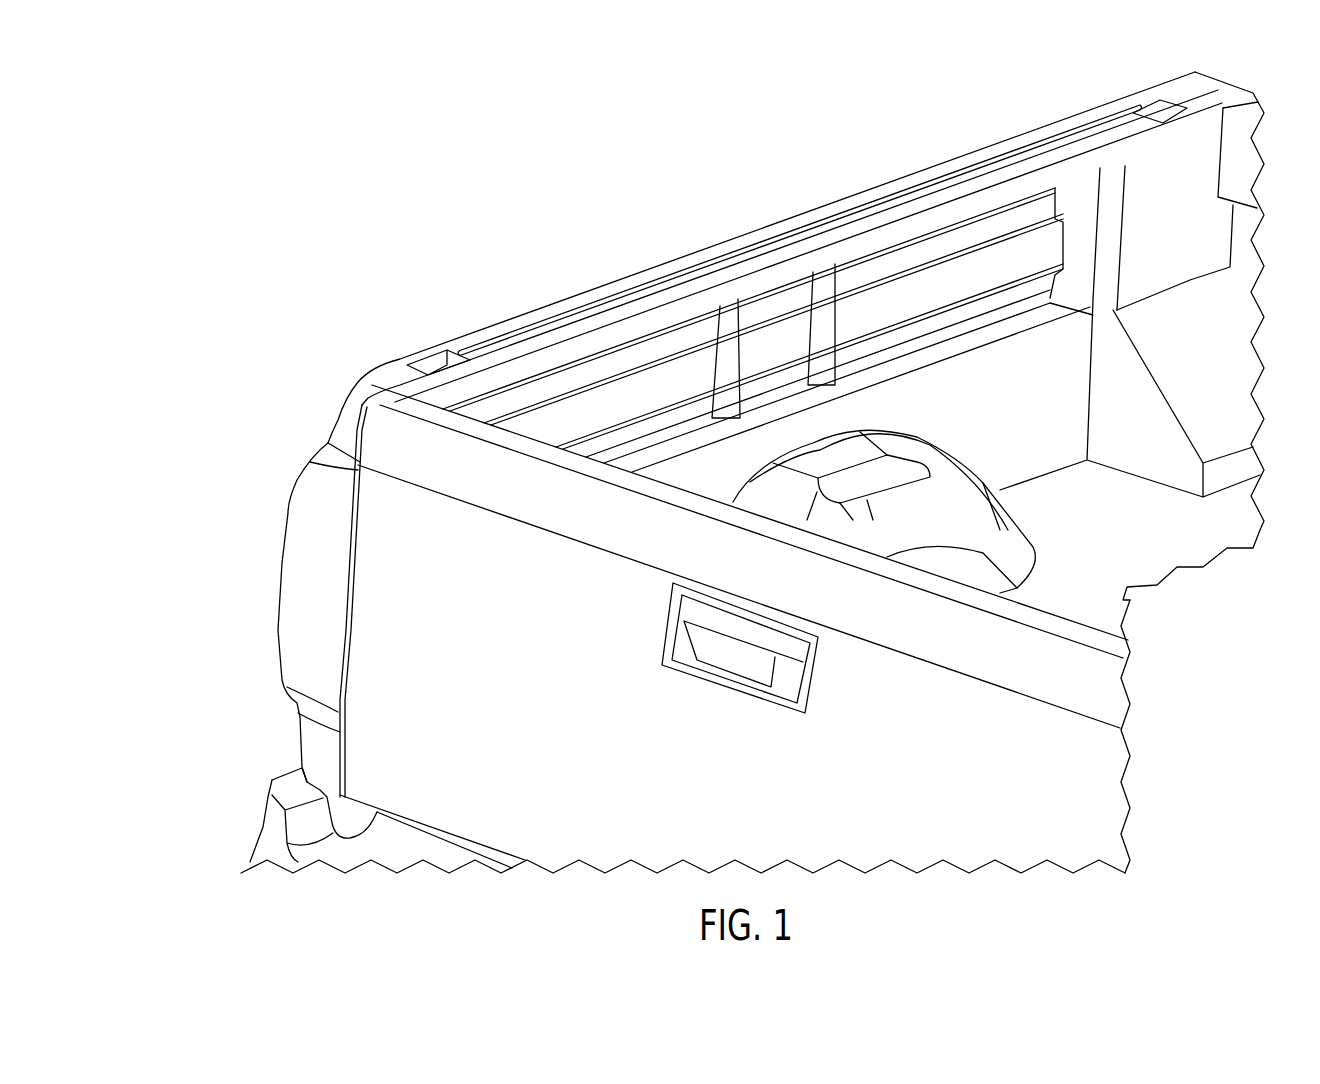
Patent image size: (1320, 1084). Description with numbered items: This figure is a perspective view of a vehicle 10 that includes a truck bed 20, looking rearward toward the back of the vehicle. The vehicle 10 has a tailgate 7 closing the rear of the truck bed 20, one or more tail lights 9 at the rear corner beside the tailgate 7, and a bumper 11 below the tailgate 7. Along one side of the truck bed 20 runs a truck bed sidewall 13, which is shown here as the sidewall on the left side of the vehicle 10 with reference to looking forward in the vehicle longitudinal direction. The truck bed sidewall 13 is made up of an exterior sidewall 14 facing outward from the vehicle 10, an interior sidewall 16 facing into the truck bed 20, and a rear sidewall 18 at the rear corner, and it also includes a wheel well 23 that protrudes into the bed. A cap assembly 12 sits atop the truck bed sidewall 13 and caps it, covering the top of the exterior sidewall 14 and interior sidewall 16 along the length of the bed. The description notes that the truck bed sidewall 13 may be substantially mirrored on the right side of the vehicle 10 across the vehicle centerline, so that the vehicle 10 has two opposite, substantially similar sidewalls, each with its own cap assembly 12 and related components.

The vehicle 10 is at (228, 148).
The cap assembly 12 is at (483, 306).
The truck bed sidewall 13 is at (830, 174).
The exterior sidewall 14 is at (713, 238).
The truck bed 20 is at (1002, 136).
The interior sidewall 16 is at (933, 309).
The tailgate 7 is at (367, 620).
The tail light 9 is at (304, 505).
The rear sidewall 18 is at (344, 416).
The bumper 11 is at (273, 818).
The wheel well 23 is at (980, 497).